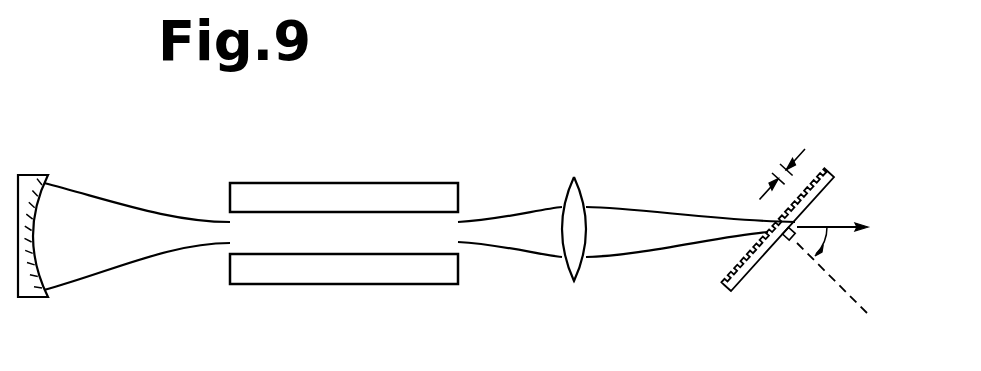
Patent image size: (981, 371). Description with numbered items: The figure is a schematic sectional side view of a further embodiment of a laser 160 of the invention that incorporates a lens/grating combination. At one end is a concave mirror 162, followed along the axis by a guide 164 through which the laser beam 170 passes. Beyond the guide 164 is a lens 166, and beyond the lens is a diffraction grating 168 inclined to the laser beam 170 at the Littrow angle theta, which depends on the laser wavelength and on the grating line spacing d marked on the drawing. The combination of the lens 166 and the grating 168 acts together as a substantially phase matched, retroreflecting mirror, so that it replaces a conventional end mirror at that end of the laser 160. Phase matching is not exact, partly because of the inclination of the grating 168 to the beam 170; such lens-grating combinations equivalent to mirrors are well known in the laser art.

The laser 160 is at (389, 110).
The concave mirror 162 is at (37, 176).
The guide 164 is at (372, 192).
The lens 166 is at (578, 197).
The diffraction grating 168 is at (750, 272).
The laser beam 170 is at (711, 243).